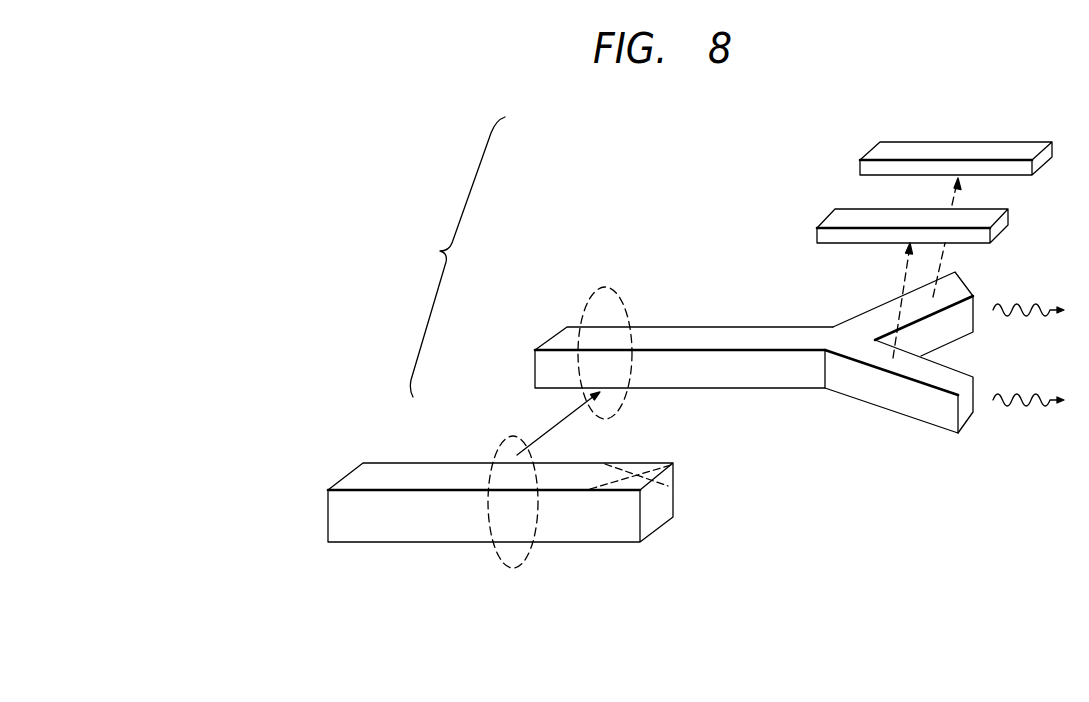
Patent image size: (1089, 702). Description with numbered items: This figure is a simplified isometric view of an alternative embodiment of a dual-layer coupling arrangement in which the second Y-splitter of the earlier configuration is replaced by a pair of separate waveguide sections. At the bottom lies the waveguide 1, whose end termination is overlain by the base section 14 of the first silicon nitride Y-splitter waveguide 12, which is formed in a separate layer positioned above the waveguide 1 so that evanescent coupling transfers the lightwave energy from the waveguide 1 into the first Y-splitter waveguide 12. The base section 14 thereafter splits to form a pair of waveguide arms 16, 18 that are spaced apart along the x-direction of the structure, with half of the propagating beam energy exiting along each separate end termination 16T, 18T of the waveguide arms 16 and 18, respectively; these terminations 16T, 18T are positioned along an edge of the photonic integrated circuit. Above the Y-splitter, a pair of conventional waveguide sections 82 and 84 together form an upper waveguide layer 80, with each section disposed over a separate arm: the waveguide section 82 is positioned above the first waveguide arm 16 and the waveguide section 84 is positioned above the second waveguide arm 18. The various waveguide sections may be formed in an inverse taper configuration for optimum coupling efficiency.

The waveguide 1 is at (395, 532).
The first Y-splitter waveguide 12 is at (548, 300).
The base section 14 is at (535, 367).
The first waveguide arm 16 is at (877, 318).
The end termination of first waveguide arm 16T is at (977, 287).
The second waveguide arm 18 is at (922, 373).
The end termination of second waveguide arm 18T is at (965, 407).
The upper waveguide layer 80 is at (428, 260).
The waveguide section 82 is at (838, 220).
The waveguide section 84 is at (880, 152).